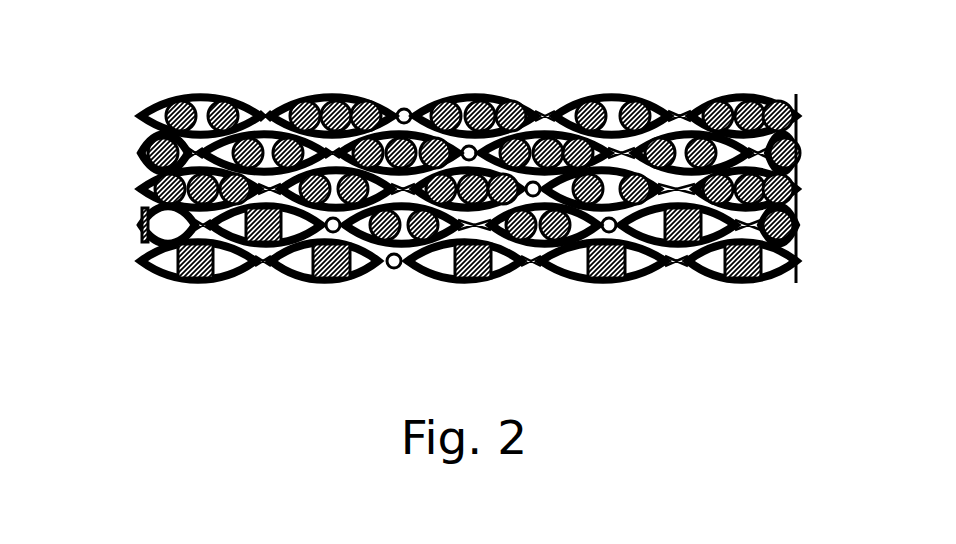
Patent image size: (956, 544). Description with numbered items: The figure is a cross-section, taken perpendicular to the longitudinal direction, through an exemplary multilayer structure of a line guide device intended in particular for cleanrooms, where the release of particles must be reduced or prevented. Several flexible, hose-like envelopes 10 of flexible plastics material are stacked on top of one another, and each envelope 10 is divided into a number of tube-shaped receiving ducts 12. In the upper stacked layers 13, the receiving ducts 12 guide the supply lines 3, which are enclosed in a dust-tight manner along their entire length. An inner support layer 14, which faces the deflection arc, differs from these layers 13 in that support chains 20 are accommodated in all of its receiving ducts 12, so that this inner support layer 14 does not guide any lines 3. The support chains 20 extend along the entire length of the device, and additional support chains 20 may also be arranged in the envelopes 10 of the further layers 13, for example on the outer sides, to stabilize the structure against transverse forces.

The supply lines 3 is at (265, 105).
The envelope 10 is at (448, 201).
The receiving ducts 12 is at (448, 201).
The layers 13 is at (497, 115).
The inner support layer 14 is at (482, 296).
The support chains 20 is at (182, 268).